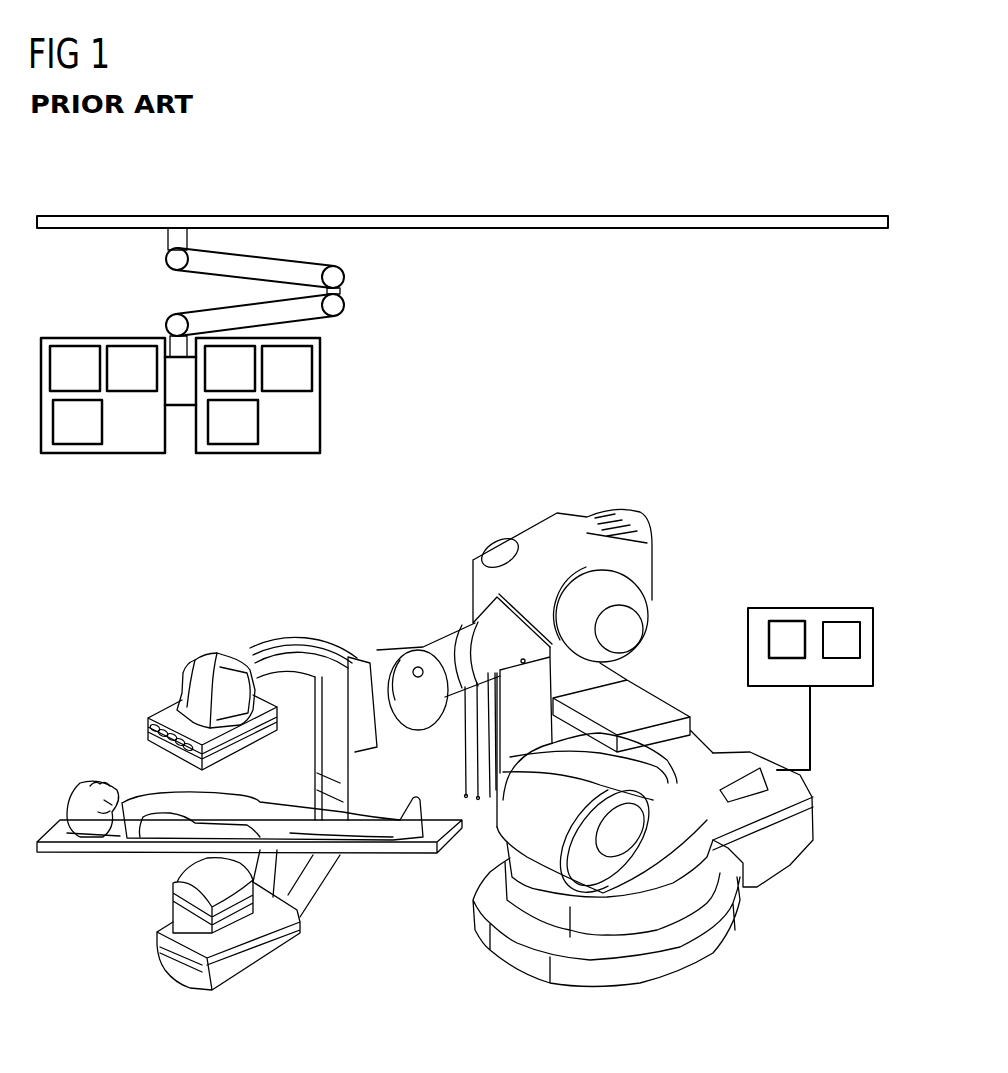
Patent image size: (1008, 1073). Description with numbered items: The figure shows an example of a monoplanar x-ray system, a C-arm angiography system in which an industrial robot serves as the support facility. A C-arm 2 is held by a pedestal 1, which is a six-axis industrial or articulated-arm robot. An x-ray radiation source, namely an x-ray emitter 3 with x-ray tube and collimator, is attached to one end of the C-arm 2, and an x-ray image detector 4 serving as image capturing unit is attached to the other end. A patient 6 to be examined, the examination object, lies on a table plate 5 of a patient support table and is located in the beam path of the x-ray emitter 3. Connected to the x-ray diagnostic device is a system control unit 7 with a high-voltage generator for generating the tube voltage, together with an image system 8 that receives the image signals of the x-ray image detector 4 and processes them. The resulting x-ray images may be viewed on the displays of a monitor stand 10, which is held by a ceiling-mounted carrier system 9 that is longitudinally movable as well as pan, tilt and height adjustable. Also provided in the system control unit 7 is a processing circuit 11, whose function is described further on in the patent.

The pedestal 1 is at (740, 937).
The C-arm 2 is at (318, 663).
The x-ray emitter 3 is at (270, 942).
The x-ray image detector 4 is at (173, 717).
The table plate 5 is at (105, 845).
The patient 6 is at (148, 802).
The system control unit 7 is at (811, 662).
The image system 8 is at (837, 633).
The carrier system 9 is at (337, 308).
The monitor stand 10 is at (88, 358).
The processing circuit 11 is at (784, 637).